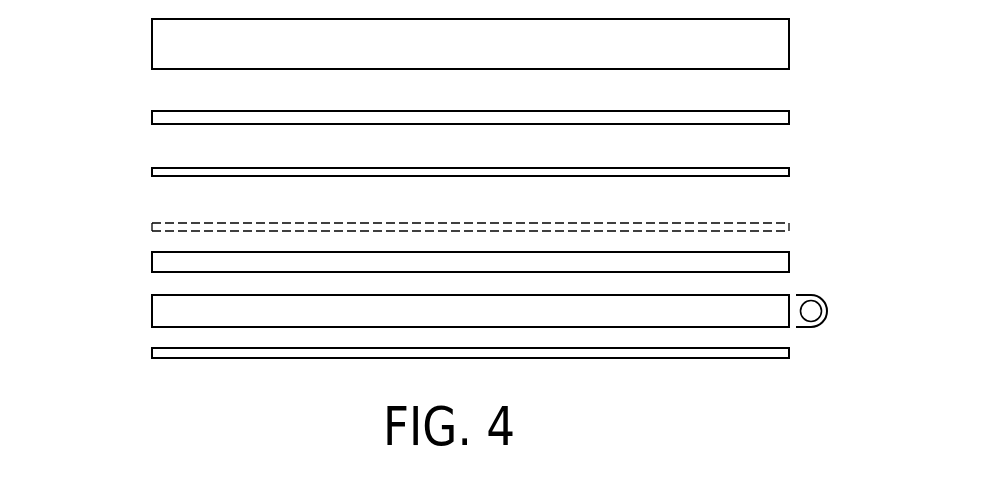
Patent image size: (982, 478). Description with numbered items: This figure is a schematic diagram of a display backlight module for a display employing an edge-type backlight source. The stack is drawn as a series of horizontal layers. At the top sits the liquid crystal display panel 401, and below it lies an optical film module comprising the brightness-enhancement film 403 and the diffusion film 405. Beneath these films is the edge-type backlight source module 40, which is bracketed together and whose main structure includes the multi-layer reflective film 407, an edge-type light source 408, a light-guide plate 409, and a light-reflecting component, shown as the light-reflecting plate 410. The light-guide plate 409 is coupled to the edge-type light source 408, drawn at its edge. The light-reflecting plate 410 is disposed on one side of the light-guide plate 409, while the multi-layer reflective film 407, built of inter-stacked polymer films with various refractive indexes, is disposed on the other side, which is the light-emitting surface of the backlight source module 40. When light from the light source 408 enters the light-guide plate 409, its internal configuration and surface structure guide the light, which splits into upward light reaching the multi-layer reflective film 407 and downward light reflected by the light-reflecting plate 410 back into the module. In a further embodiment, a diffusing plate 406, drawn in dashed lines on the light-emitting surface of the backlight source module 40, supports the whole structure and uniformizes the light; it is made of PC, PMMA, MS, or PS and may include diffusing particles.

The backlight source module 40 is at (72, 212).
The liquid crystal display panel 401 is at (789, 44).
The brightness-enhancement film 403 is at (789, 117).
The diffusion film 405 is at (780, 168).
The diffusing plate 406 is at (150, 227).
The multi-layer reflective film 407 is at (152, 257).
The edge-type light source 408 is at (811, 312).
The light-guide plate 409 is at (152, 307).
The light-reflecting plate 410 is at (152, 351).